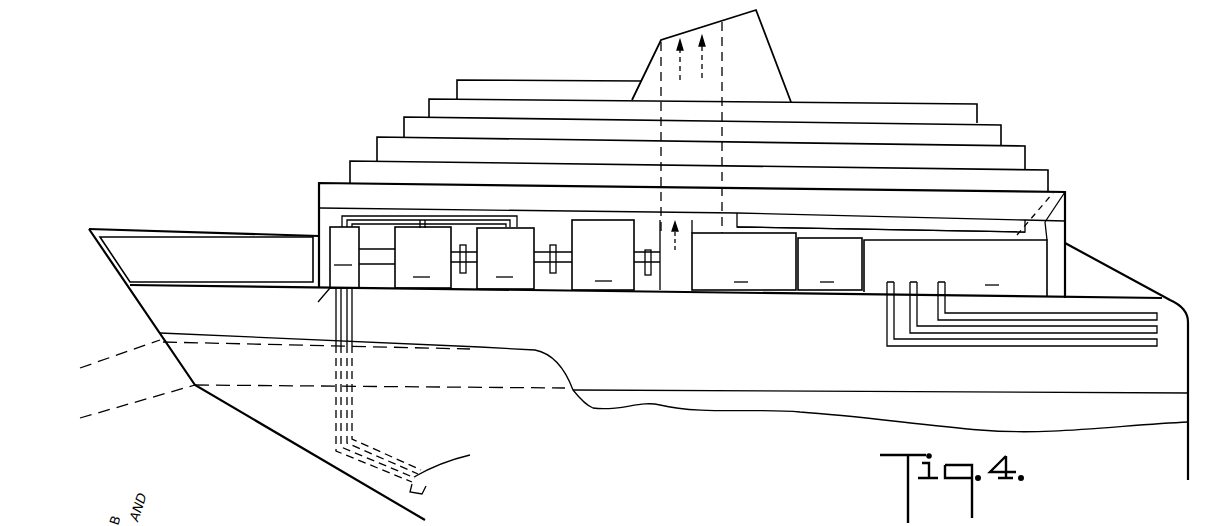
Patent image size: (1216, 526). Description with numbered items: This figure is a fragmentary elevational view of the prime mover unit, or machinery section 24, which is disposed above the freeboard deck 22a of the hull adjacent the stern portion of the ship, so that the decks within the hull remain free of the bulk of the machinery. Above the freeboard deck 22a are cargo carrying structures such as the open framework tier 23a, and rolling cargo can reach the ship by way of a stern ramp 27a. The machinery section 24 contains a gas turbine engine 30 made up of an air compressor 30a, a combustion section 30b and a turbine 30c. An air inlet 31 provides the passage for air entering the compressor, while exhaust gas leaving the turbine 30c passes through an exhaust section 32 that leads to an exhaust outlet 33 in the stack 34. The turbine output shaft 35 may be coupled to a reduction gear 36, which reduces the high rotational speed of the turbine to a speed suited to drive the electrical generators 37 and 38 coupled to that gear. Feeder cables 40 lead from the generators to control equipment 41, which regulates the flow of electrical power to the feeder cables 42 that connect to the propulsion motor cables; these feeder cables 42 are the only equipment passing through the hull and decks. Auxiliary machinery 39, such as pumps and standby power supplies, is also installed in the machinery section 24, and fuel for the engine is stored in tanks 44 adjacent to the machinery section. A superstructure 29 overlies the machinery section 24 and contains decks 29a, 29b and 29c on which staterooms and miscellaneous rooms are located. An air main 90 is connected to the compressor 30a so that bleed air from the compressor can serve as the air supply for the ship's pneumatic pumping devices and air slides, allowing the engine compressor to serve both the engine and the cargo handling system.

The freeboard deck 22a is at (763, 390).
The cargo carrying structure tier 23a is at (1146, 281).
The machinery section 24 is at (333, 215).
The stern ramp 27a is at (150, 398).
The superstructure 29 is at (722, 137).
The superstructure deck 29a is at (1052, 195).
The superstructure deck 29b is at (1033, 167).
The superstructure deck 29c is at (1010, 143).
The gas turbine engine 30 is at (869, 246).
The air compressor 30a is at (955, 268).
The combustion section 30b is at (830, 264).
The turbine 30c is at (744, 261).
The air inlet 31 is at (1078, 186).
The exhaust section 32 is at (672, 291).
The exhaust outlet 33 is at (645, 200).
The stack 34 is at (769, 52).
The turbine output shaft 35 is at (652, 250).
The reduction gear 36 is at (603, 255).
The electrical generator 37 is at (505, 258).
The electrical generator 38 is at (423, 257).
The auxiliary machinery 39 is at (982, 226).
The feeder cables 40 is at (483, 224).
The control equipment 41 is at (310, 275).
The feeder cables 42 is at (416, 480).
The fuel tanks 44 is at (219, 238).
The air main 90 is at (1066, 334).